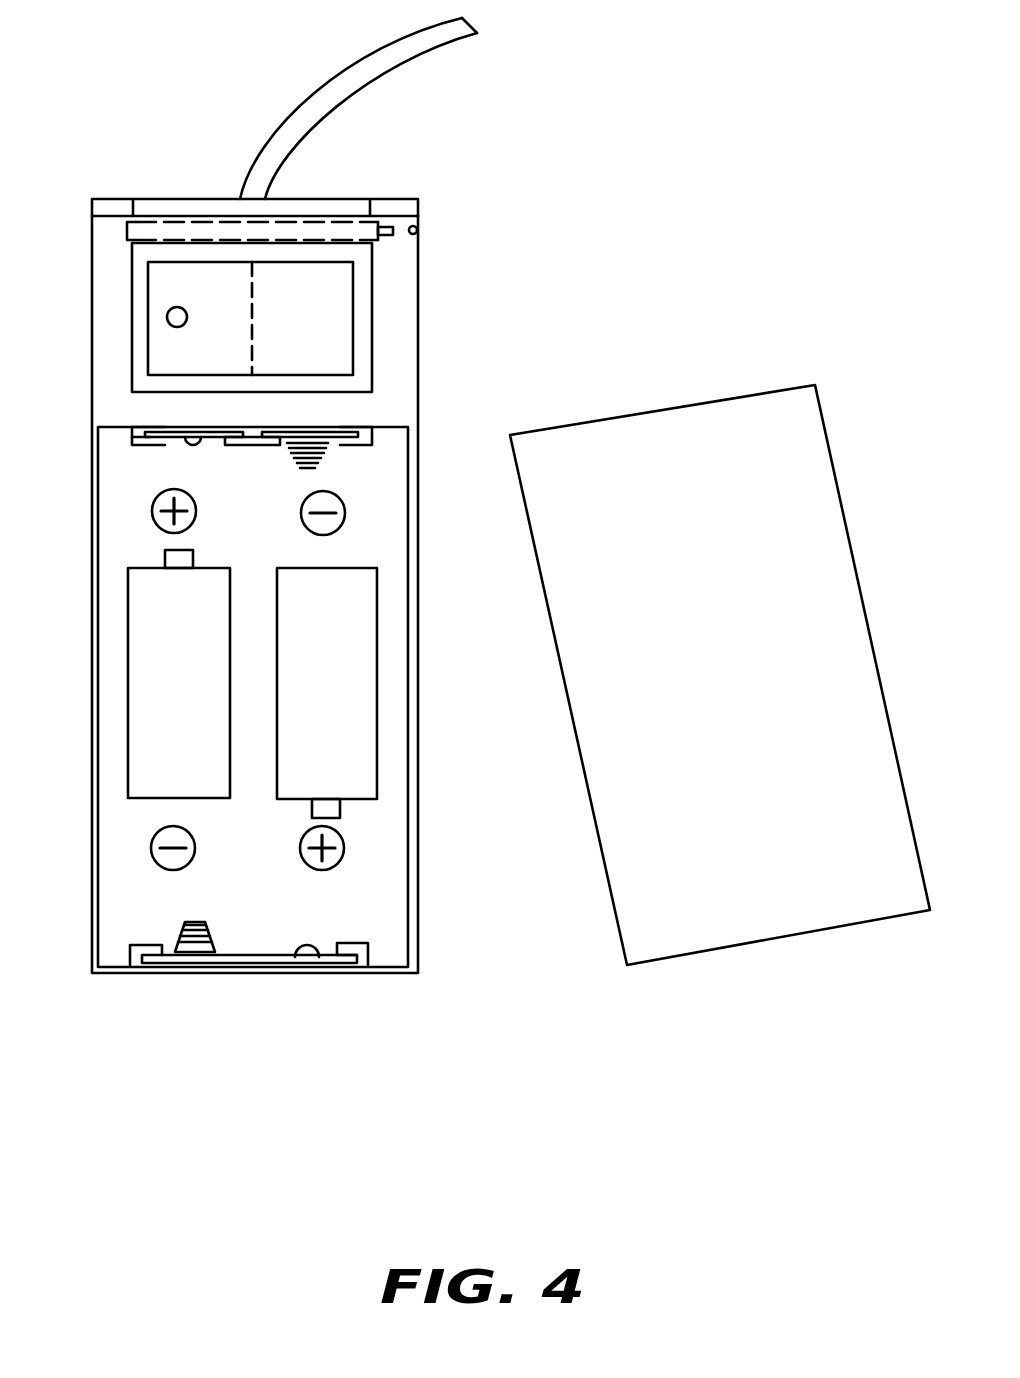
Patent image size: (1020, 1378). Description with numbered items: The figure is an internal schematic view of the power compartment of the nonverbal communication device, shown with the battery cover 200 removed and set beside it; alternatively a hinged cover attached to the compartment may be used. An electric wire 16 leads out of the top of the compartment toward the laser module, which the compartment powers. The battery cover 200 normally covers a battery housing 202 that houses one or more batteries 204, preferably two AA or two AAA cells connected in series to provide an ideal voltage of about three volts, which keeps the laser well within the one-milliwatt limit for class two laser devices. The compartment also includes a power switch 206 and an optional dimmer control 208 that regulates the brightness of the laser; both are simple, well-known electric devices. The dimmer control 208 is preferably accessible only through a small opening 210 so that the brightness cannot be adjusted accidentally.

The electric wire 16 is at (330, 78).
The battery cover 200 is at (795, 413).
The battery housing 202 is at (375, 925).
The batteries 204 is at (207, 784).
The power switch 206 is at (328, 358).
The dimmer control 208 is at (338, 232).
The small opening 210 is at (418, 236).